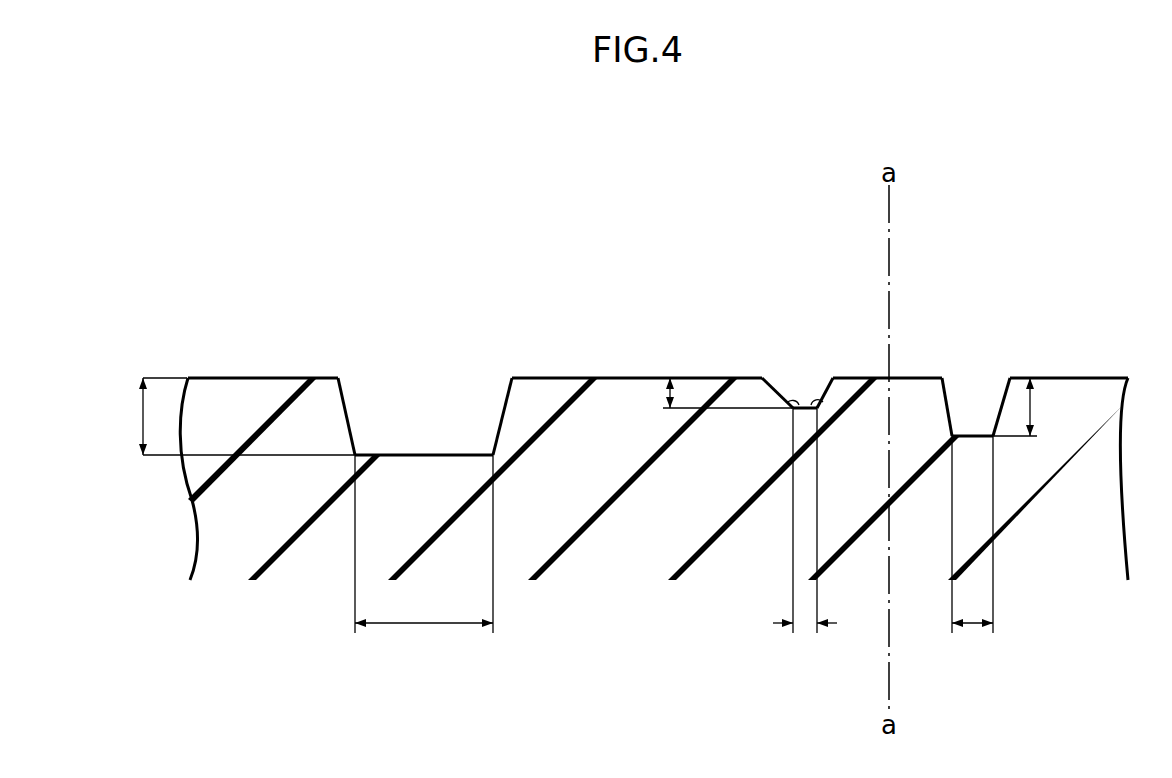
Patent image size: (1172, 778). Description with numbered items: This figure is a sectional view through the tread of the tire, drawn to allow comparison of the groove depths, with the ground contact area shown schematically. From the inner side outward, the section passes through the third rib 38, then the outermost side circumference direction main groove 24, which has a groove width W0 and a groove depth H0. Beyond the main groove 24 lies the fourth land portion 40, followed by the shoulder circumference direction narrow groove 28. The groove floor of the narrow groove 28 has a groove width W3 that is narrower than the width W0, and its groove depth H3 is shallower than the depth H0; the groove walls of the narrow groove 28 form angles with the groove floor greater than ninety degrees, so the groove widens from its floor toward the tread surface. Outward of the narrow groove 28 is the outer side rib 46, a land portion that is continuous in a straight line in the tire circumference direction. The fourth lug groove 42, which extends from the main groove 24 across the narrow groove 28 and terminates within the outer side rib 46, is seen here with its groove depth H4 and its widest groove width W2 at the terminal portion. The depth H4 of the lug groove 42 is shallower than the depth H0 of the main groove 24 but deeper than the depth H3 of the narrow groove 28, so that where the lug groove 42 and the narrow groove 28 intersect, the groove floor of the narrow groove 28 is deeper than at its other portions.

The outermost side circumference direction main groove 24 is at (502, 413).
The shoulder circumference direction narrow groove 28 is at (824, 393).
The third rib 38 is at (245, 380).
The fourth land portion 40 is at (582, 380).
The fourth lug groove 42 is at (1001, 405).
The outer side rib 46 is at (902, 378).
The groove depth of outermost side circumference direction main groove H0 is at (141, 412).
The groove depth of shoulder circumference direction narrow groove H3 is at (665, 393).
The groove depth of fourth lug groove H4 is at (1034, 405).
The groove width of outermost side circumference direction main groove W0 is at (420, 626).
The groove width of fourth lug groove at terminal portion W2 is at (971, 626).
The groove width of groove floor of shoulder circumference direction narrow groove W3 is at (801, 626).